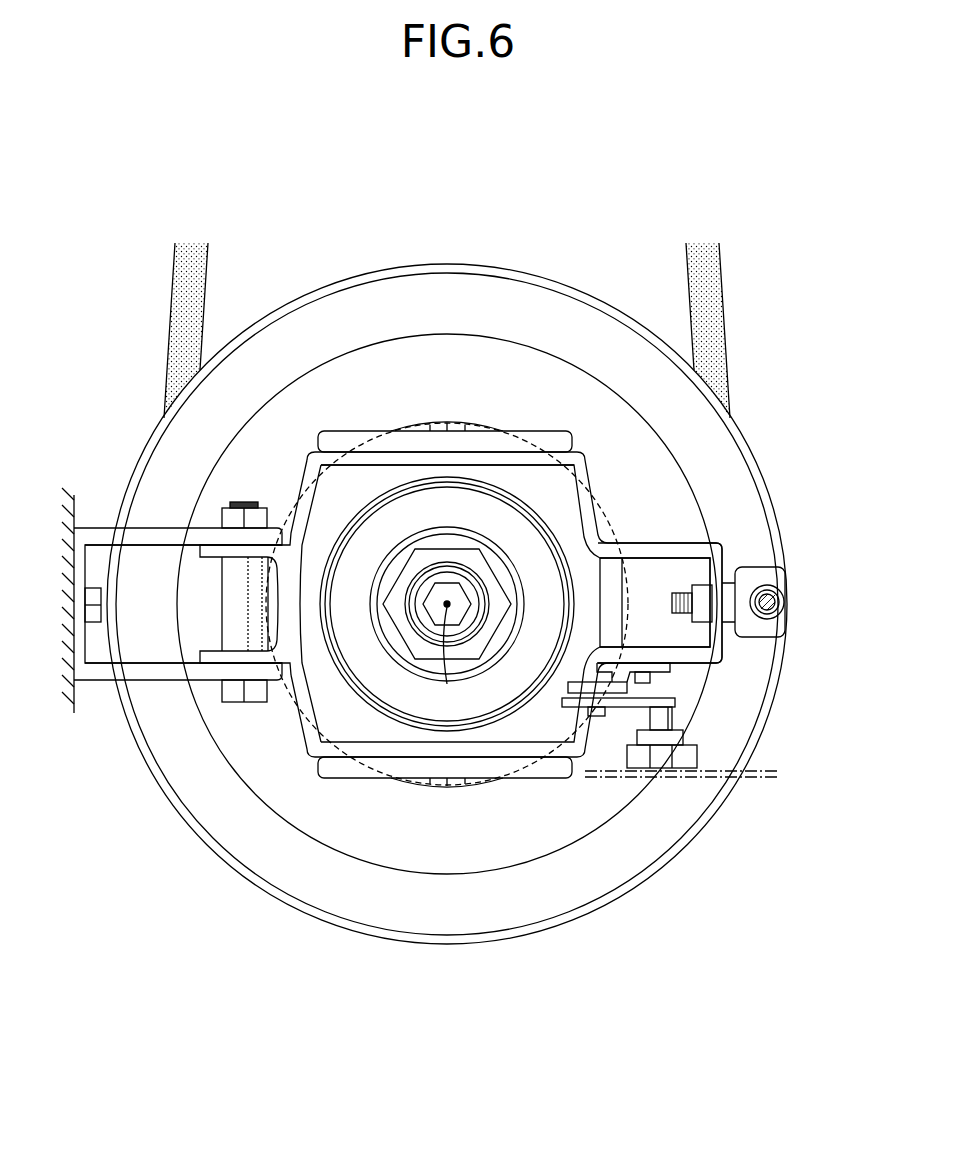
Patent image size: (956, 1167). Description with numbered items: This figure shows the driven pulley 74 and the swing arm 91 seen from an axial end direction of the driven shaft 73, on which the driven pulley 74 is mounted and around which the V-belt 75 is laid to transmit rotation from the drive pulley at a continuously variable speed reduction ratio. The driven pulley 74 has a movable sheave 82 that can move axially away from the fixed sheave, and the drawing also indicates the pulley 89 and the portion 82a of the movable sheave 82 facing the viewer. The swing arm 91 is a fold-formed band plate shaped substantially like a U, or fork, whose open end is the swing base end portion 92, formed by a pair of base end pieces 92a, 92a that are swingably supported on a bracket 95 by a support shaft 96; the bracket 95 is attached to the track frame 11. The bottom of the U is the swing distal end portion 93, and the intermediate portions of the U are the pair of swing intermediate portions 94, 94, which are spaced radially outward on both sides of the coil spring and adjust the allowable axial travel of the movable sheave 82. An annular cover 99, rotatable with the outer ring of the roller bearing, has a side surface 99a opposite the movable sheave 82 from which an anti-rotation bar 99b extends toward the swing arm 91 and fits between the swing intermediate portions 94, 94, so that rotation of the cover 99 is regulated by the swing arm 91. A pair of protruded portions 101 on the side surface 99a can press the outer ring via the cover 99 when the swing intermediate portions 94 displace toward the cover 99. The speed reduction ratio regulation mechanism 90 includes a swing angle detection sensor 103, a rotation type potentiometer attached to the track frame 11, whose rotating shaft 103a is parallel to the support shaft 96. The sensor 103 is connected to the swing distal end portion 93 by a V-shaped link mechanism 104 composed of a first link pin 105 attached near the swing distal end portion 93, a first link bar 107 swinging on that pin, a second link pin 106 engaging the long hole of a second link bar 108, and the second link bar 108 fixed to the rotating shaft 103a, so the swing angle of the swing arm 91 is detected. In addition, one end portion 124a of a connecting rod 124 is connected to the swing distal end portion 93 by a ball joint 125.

The driven pulley 74 is at (130, 266).
The V-belt 75 is at (200, 275).
The driven pulley 89 is at (186, 444).
The movable sheave 82 is at (441, 604).
The pulley inner portion 82a is at (232, 488).
The track frame 11 is at (72, 703).
The bracket 95 is at (98, 682).
The swing base end portion 92 is at (178, 843).
The base end pieces 92a is at (205, 662).
The support shaft 96 is at (243, 663).
The speed reduction ratio regulation mechanism 90 is at (401, 802).
The swing arm 91 is at (306, 758).
The annular cover 99 is at (600, 498).
The side surface 99a is at (557, 477).
The anti-rotation bar 99b is at (618, 598).
The swing intermediate portions 94 is at (386, 462).
The protruded portions 101 is at (468, 447).
The driven shaft 73 is at (516, 688).
The swing distal end portion 93 is at (724, 556).
The ball joint 125 is at (762, 572).
The one end portion 124a is at (792, 599).
The connecting rod 124 is at (778, 597).
The link mechanism 104 is at (615, 714).
The first link bar 107 is at (670, 667).
The first link pin 105 is at (627, 690).
The second link bar 108 is at (652, 682).
The rotating shaft 103a is at (662, 718).
The swing angle detection sensor 103 is at (683, 756).
The second link pin 106 is at (604, 717).